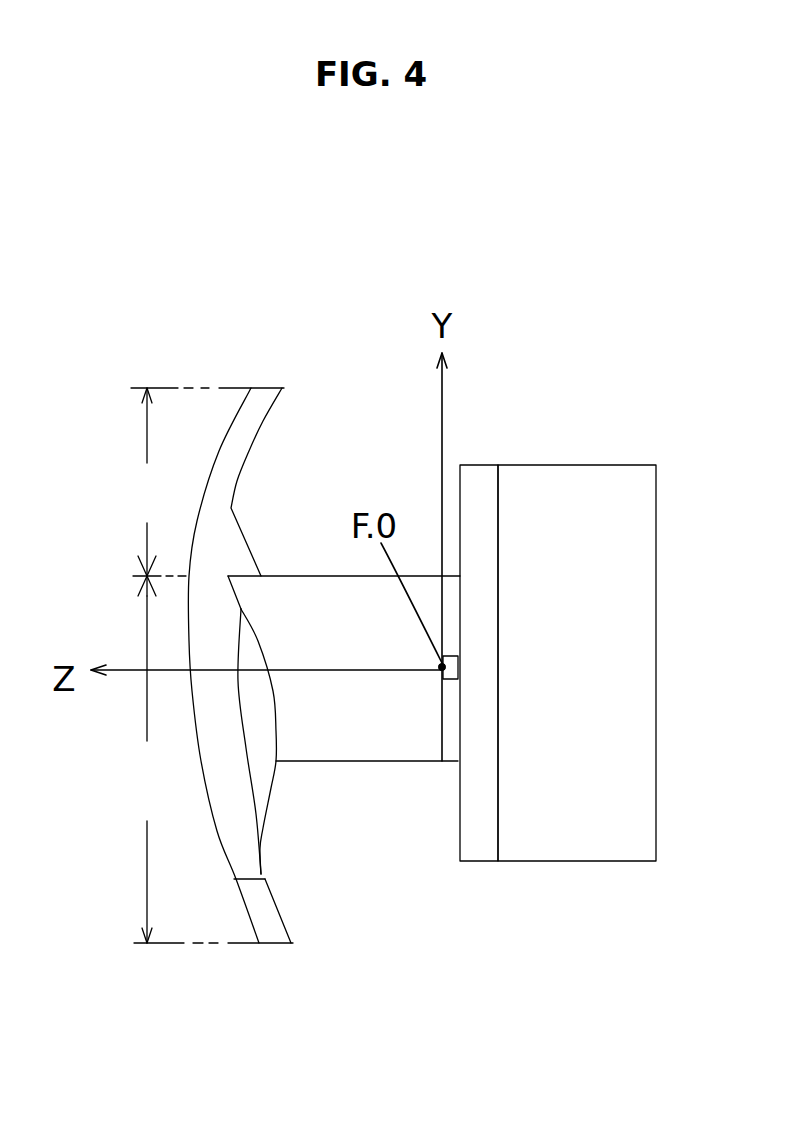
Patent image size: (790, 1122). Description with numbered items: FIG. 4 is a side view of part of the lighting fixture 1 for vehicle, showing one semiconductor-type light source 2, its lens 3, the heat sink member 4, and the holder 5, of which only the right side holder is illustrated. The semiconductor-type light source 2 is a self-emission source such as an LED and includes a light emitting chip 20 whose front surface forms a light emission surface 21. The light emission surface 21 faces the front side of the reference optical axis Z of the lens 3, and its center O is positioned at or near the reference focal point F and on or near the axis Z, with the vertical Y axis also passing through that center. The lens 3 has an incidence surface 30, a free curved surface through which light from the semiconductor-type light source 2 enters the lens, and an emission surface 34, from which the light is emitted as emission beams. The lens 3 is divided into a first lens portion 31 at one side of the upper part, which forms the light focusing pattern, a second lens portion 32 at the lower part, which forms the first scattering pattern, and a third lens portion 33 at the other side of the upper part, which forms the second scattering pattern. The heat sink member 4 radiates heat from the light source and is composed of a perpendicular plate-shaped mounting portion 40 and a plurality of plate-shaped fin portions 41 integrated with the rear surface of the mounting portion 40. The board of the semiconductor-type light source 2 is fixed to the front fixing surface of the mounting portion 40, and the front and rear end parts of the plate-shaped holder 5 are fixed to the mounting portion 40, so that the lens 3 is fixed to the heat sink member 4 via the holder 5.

The lighting fixture for vehicle 1 is at (500, 357).
The semiconductor-type light source 2 is at (463, 670).
The lens 3 is at (267, 385).
The heat sink member 4 is at (552, 465).
The holder 5 is at (303, 575).
The light emitting chip 20 is at (448, 680).
The light emission surface 21 is at (441, 668).
The incidence surface 30 is at (262, 422).
The first lens portion 31 is at (141, 492).
The second lens portion 32 is at (168, 769).
The third lens portion 33 is at (256, 482).
The emission surface 34 is at (222, 842).
The mounting portion 40 is at (480, 845).
The fin portion 41 is at (610, 847).